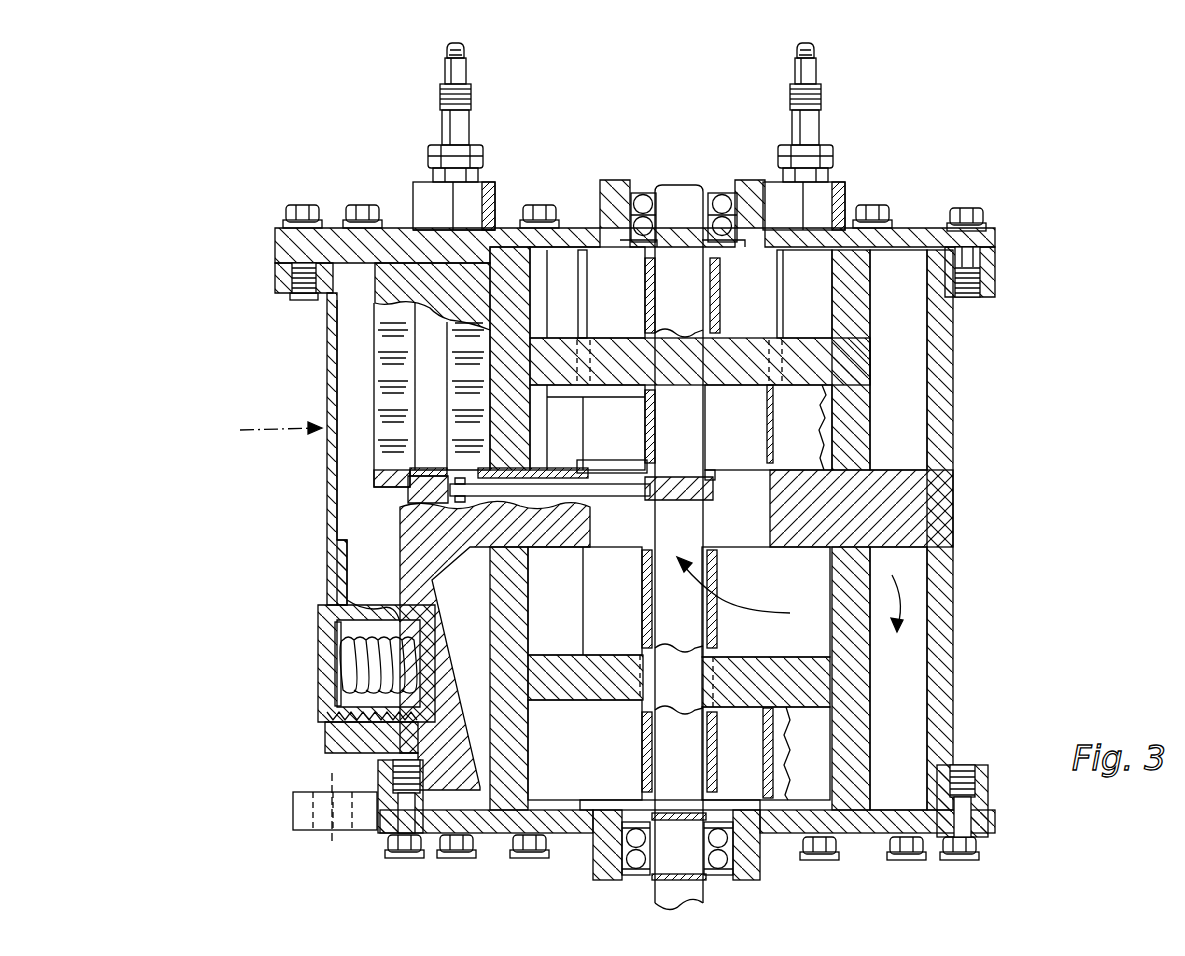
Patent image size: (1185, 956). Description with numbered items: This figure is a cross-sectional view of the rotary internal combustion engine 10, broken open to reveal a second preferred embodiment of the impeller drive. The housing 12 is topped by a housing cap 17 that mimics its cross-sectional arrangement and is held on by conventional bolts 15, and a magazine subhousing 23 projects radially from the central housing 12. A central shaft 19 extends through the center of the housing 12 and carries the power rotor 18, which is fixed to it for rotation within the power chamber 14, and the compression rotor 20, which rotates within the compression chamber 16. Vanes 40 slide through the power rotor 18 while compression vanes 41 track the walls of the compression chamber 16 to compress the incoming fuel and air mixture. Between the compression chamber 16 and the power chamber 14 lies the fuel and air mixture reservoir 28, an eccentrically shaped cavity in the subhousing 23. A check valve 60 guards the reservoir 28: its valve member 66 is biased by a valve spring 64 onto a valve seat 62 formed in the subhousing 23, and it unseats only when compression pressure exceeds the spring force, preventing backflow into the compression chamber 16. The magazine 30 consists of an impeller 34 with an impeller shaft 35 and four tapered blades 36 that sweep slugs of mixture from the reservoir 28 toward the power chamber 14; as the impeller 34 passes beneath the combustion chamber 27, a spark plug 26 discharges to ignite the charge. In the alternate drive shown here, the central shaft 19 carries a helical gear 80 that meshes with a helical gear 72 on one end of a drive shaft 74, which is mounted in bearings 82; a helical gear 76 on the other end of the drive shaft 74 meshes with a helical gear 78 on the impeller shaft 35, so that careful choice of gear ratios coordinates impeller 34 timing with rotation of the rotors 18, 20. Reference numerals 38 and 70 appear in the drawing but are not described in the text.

The rotary internal combustion engine 10 is at (188, 190).
The housing 12 is at (327, 516).
The power chamber 14 is at (808, 410).
The bolts 15 is at (300, 225).
The compression chamber 16 is at (938, 598).
The housing cap 17 is at (375, 228).
The power rotor 18 is at (855, 352).
The central shaft 19 is at (673, 283).
The compression rotor 20 is at (862, 690).
The magazine subhousing 23 is at (240, 430).
The spark plug 26 is at (470, 97).
The combustion chamber 27 is at (490, 210).
The fuel and air mixture reservoir 28 is at (323, 440).
The magazine 30 is at (316, 387).
The impeller 34 is at (373, 350).
The impeller shaft 35 is at (412, 300).
The blades 36 is at (373, 367).
The bearing 38 is at (608, 184).
The vanes 40 is at (808, 267).
The compression vanes 41 is at (733, 752).
The check valve 60 is at (322, 616).
The valve seat 62 is at (344, 652).
The valve spring 64 is at (338, 688).
The valve member 66 is at (330, 716).
The flow direction arrow 70 is at (748, 591).
The helical gear 72 is at (720, 487).
The drive shaft 74 is at (563, 490).
The helical gear 76 is at (352, 520).
The helical gear 78 is at (425, 476).
The helical gear 80 is at (650, 502).
The bearings 82 is at (594, 468).